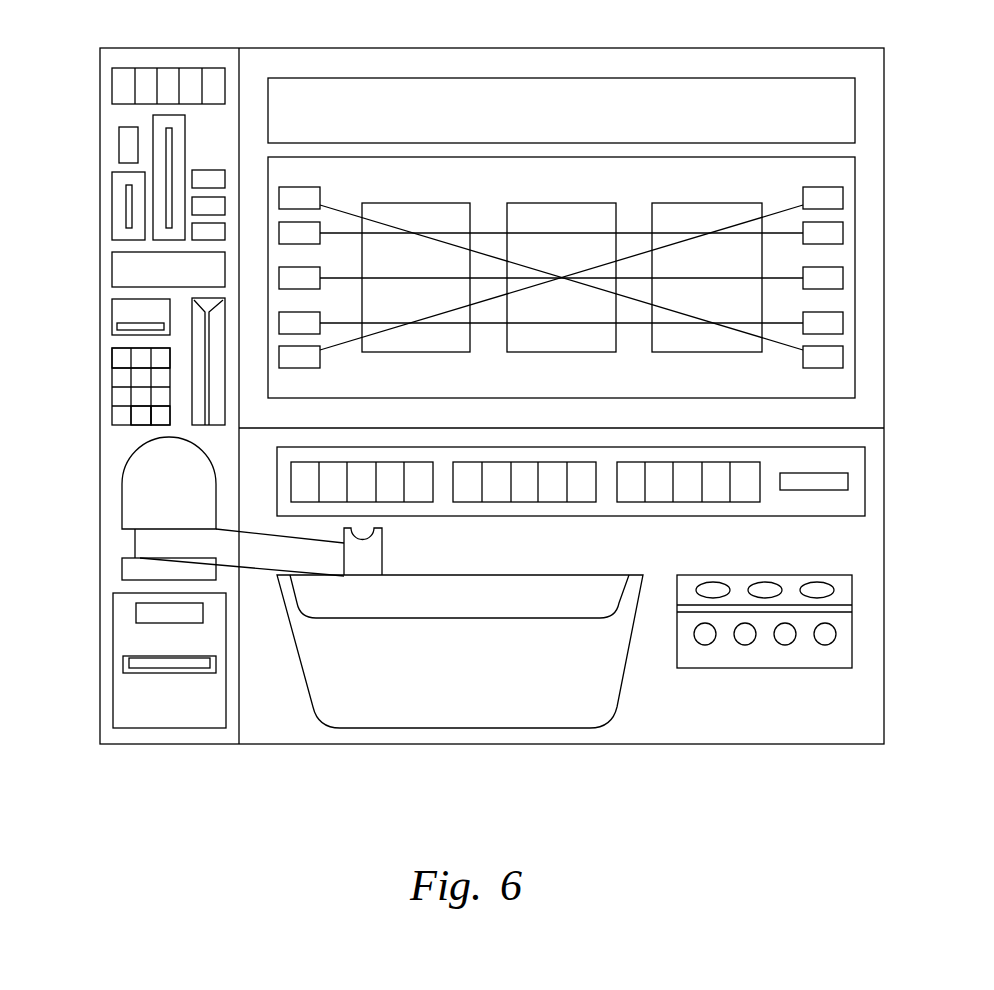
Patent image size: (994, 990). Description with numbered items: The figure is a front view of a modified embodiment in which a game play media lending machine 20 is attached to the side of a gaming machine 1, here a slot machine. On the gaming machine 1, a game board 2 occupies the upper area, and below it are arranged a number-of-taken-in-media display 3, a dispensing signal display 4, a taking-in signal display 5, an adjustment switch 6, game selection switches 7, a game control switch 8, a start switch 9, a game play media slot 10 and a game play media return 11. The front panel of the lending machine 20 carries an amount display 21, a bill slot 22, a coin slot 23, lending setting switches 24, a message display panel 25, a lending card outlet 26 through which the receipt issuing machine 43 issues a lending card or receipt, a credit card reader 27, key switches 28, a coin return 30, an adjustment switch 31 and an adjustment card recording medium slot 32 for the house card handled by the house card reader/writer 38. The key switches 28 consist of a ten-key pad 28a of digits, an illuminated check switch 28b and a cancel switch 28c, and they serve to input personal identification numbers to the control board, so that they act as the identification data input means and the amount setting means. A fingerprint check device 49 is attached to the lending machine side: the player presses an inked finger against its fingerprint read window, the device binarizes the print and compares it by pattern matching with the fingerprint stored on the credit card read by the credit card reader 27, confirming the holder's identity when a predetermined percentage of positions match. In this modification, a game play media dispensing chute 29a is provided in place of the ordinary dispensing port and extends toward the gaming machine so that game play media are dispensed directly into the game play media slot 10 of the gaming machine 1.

The gaming machine 1 is at (792, 48).
The game board 2 is at (842, 168).
The number-of-taken-in-media display 3 is at (390, 470).
The dispensing signal display 4 is at (553, 470).
The taking-in signal display 5 is at (717, 470).
The adjustment switch 6 is at (843, 483).
The game selection switches 7 is at (766, 590).
The game control switch 8 is at (787, 637).
The start switch 9 is at (707, 637).
The game play media slot 10 is at (382, 552).
The game play media return 11 is at (335, 718).
The game play media lending machine 20 is at (175, 48).
The amount display 21 is at (142, 68).
The bill slot 22 is at (165, 130).
The coin slot 23 is at (129, 207).
The lending setting switches 24 is at (208, 170).
The message display panel 25 is at (113, 270).
The lending card outlet 26 is at (120, 327).
The credit card reader 27 is at (208, 365).
The key switches 28 is at (52, 385).
The ten-key pad 28a is at (112, 370).
The illuminated check switch 28b is at (140, 418).
The cancel switch 28c is at (160, 420).
The game play media dispensing chute 29a is at (147, 540).
The coin return 30 is at (130, 567).
The adjustment switch 31 is at (147, 615).
The adjustment card recording medium slot 32 is at (140, 668).
The house card reader/writer 38 is at (163, 718).
The receipt issuing machine 43 is at (113, 307).
The fingerprint check device 49 is at (118, 147).